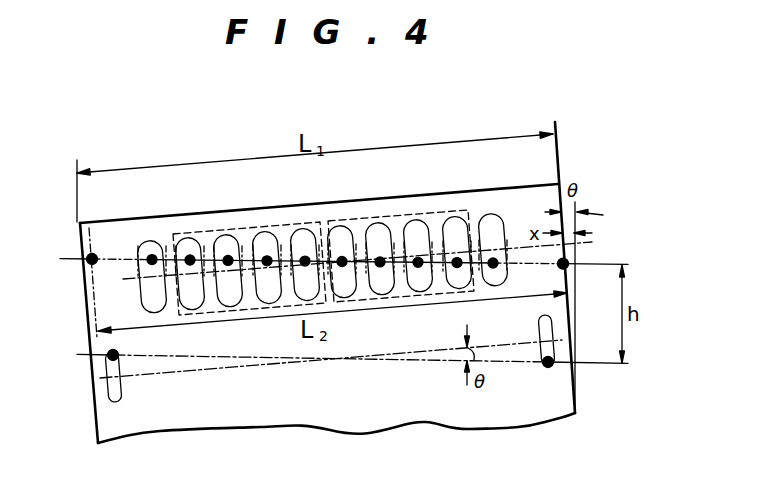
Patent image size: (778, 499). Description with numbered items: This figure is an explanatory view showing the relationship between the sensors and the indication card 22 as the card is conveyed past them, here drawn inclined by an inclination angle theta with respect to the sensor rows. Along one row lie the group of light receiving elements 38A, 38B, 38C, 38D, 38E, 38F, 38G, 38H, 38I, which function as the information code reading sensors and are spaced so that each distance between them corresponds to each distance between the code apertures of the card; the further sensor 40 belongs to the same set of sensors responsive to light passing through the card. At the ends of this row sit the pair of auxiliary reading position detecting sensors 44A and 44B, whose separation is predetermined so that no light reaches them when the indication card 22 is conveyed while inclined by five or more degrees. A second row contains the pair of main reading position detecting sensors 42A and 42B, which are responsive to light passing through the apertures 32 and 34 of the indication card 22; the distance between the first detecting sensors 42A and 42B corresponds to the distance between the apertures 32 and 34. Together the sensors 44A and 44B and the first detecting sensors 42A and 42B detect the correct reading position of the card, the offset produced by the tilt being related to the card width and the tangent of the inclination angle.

The indication card 22 is at (553, 184).
The aperture 32 is at (107, 393).
The aperture 34 is at (541, 352).
The light receiving element 38A is at (150, 259).
The light receiving element 38B is at (188, 259).
The light receiving element 38C is at (227, 259).
The light receiving element 38D is at (265, 259).
The light receiving element 38E is at (306, 259).
The light receiving element 38F is at (343, 259).
The light receiving element 38G is at (381, 259).
The light receiving element 38H is at (417, 265).
The light receiving element 38I is at (454, 265).
The light receiving element 40 is at (494, 265).
The light receiving element 42A is at (108, 357).
The light receiving element 42B is at (551, 365).
The sensor 44A is at (90, 261).
The sensor 44B is at (568, 263).